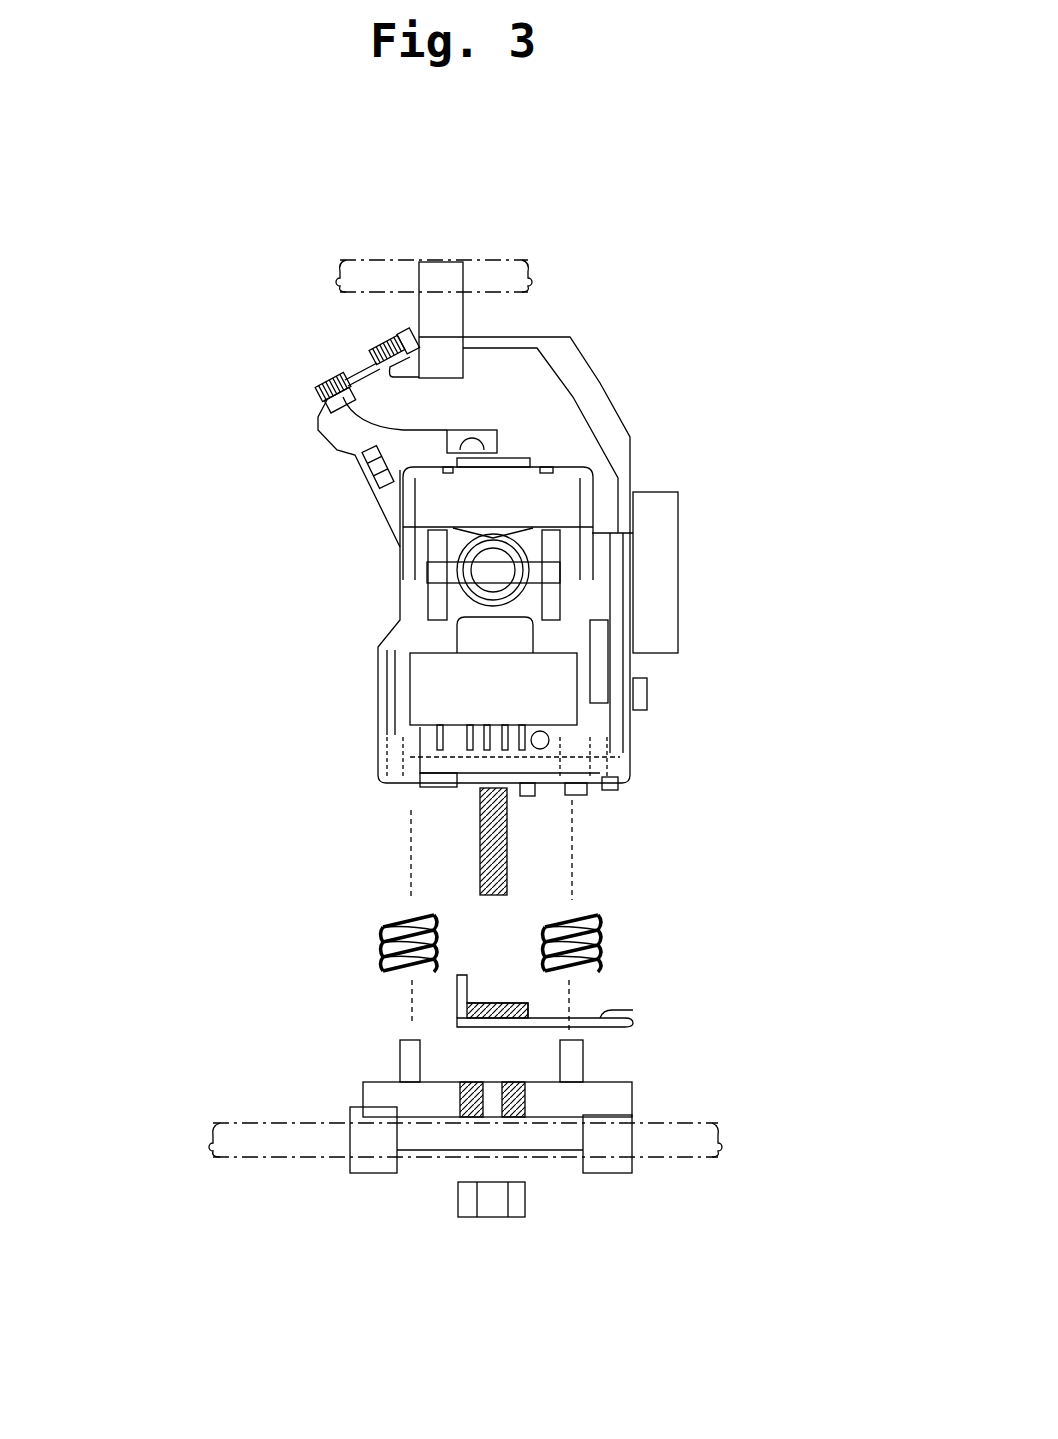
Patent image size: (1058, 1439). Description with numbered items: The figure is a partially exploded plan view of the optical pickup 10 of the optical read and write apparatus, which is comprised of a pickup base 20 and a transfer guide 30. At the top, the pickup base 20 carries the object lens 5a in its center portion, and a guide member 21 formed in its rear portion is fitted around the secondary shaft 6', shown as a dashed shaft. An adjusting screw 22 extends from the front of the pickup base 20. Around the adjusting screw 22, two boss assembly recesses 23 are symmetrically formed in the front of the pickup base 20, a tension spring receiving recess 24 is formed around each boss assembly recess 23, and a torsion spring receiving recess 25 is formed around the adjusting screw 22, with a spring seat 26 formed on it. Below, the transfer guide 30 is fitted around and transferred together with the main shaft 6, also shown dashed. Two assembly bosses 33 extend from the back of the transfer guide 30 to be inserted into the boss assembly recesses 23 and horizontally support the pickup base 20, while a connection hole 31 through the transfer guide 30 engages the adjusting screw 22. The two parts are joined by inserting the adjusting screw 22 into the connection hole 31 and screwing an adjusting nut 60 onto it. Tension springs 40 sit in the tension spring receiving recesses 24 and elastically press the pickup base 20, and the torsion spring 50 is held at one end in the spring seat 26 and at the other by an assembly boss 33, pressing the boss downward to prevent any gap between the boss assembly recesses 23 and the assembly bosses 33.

The secondary shaft 6' is at (433, 217).
The guide member 21 is at (442, 267).
The optical pickup 10 is at (317, 368).
The pickup base 20 is at (583, 448).
The object lens 5a is at (470, 567).
The tension spring receiving recess 24 is at (613, 790).
The boss assembly recess 23 is at (577, 803).
The torsion spring receiving recess 25 is at (530, 796).
The spring seat 26 is at (447, 790).
The adjusting screw 22 is at (480, 838).
The tension springs 40 is at (587, 912).
The torsion spring 50 is at (603, 1015).
The assembly bosses 33 is at (400, 1048).
The transfer guide 30 is at (628, 1097).
The connection hole 31 is at (493, 1103).
The main shaft 6 is at (465, 1211).
The adjusting nut 60 is at (495, 1208).